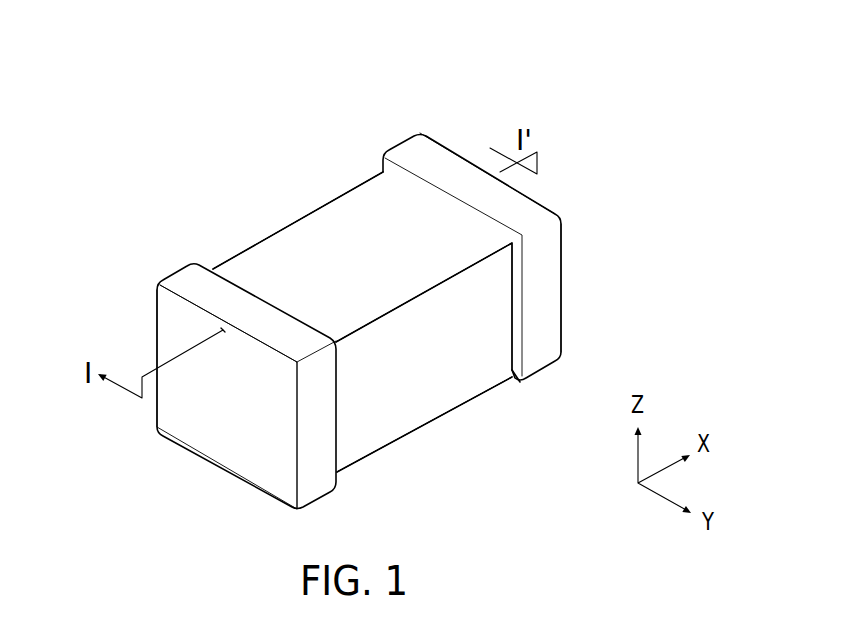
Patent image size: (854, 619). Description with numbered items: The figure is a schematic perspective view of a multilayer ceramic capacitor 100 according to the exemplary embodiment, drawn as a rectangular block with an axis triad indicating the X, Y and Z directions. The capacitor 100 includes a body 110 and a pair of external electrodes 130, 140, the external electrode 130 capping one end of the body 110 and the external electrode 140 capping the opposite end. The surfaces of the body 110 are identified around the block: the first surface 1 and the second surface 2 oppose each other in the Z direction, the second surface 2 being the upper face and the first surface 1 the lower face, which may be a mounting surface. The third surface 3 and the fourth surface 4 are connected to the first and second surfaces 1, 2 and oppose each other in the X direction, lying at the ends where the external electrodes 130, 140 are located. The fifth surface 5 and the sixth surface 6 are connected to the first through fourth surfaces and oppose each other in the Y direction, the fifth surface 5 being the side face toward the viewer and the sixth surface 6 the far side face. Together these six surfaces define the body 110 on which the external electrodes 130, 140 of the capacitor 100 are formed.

The multilayer ceramic capacitor 100 is at (192, 90).
The body 110 is at (313, 227).
The external electrode 130 is at (182, 277).
The external electrode 140 is at (459, 236).
The first surface 1 is at (424, 449).
The second surface 2 is at (362, 220).
The third surface 3 is at (220, 398).
The fourth surface 4 is at (490, 200).
The fifth surface 5 is at (432, 357).
The sixth surface 6 is at (295, 207).